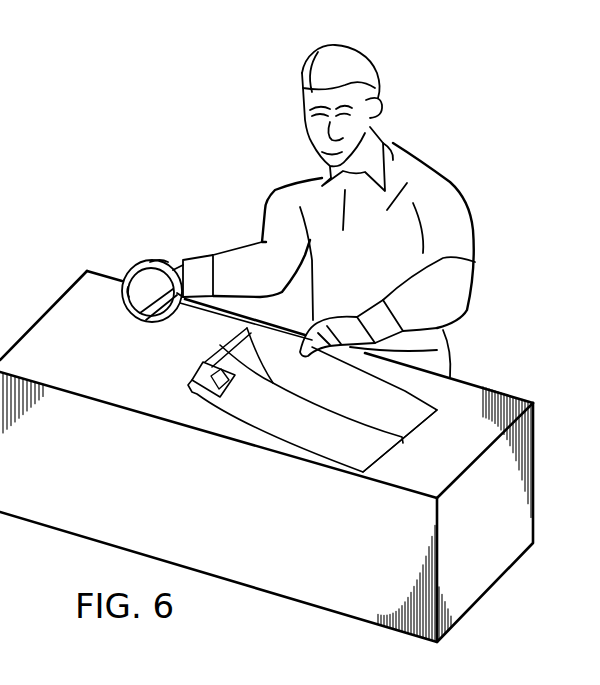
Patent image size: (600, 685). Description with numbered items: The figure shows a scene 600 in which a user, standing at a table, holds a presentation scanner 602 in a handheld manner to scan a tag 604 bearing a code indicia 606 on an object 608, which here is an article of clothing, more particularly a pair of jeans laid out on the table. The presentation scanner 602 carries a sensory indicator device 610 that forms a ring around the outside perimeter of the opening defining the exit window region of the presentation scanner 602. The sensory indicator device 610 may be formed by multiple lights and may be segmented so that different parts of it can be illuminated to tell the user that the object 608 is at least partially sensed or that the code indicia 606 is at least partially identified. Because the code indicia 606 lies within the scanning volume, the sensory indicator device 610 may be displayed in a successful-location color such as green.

The scene 600 is at (94, 62).
The presentation scanner 602 is at (128, 311).
The tag 604 is at (300, 387).
The code indicia 606 is at (198, 369).
The object 608 is at (421, 421).
The sensory indicator device 610 is at (153, 262).